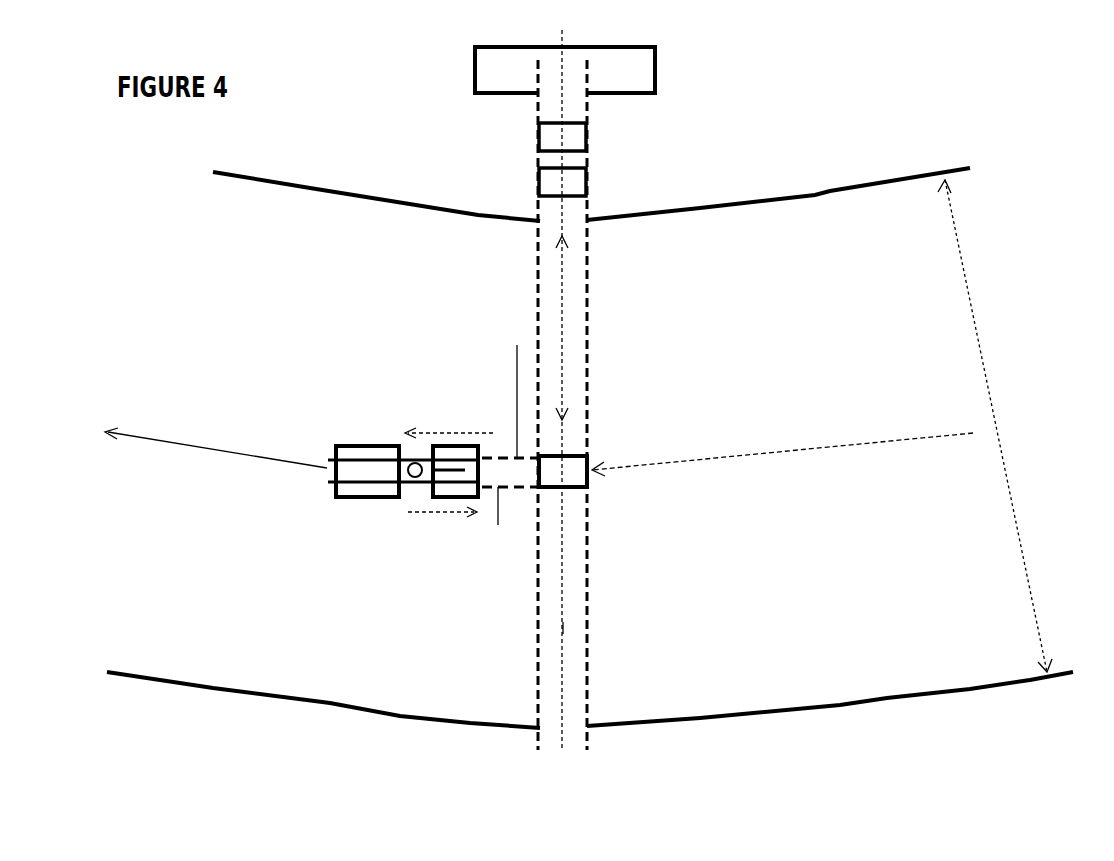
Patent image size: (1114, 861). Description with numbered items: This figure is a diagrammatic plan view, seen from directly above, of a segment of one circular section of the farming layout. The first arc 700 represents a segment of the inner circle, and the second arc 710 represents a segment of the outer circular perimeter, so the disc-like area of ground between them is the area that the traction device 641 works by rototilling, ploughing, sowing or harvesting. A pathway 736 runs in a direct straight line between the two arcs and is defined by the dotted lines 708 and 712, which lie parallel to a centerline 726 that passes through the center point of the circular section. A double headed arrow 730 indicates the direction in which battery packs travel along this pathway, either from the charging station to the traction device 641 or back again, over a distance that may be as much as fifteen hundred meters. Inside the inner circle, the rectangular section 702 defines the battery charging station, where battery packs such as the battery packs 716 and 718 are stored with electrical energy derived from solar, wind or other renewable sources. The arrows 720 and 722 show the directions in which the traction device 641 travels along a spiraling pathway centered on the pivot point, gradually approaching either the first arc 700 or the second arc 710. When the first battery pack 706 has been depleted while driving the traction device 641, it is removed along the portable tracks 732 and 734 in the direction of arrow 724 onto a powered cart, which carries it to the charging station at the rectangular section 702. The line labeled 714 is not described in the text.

The traction device 641 is at (373, 445).
The first arc 700 is at (310, 188).
The rectangular section 702 is at (657, 73).
The first battery pack 706 is at (563, 472).
The dotted line 708 is at (540, 607).
The second arc 710 is at (290, 697).
The dotted line 712 is at (587, 337).
The flow direction 714 is at (562, 310).
The battery pack 716 is at (565, 136).
The battery pack 718 is at (560, 177).
The arrow 720 is at (875, 440).
The arrow 722 is at (475, 433).
The arrow 724 is at (410, 490).
The centerline 726 is at (572, 510).
The double headed arrow 730 is at (980, 250).
The portable track 732 is at (505, 522).
The portable track 734 is at (502, 390).
The pathway 736 is at (563, 628).